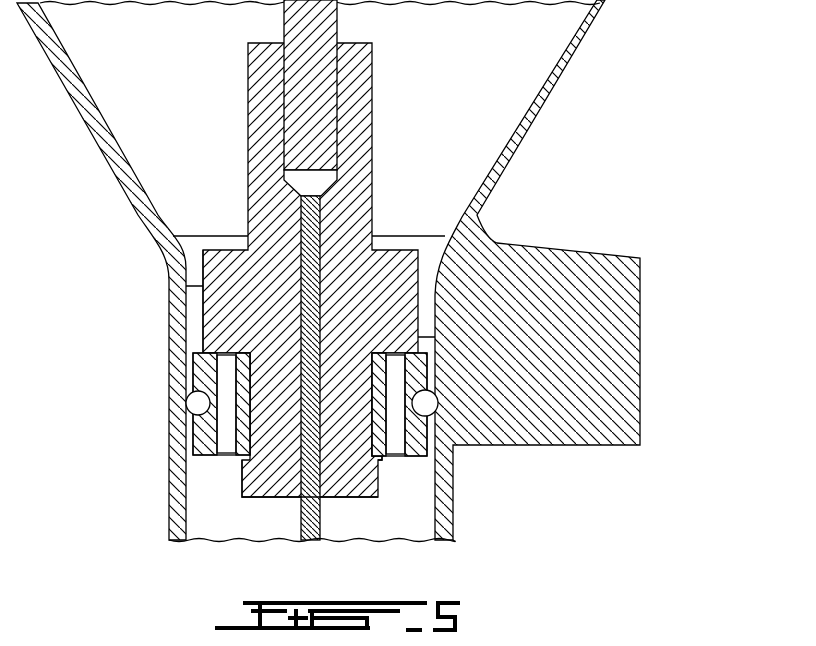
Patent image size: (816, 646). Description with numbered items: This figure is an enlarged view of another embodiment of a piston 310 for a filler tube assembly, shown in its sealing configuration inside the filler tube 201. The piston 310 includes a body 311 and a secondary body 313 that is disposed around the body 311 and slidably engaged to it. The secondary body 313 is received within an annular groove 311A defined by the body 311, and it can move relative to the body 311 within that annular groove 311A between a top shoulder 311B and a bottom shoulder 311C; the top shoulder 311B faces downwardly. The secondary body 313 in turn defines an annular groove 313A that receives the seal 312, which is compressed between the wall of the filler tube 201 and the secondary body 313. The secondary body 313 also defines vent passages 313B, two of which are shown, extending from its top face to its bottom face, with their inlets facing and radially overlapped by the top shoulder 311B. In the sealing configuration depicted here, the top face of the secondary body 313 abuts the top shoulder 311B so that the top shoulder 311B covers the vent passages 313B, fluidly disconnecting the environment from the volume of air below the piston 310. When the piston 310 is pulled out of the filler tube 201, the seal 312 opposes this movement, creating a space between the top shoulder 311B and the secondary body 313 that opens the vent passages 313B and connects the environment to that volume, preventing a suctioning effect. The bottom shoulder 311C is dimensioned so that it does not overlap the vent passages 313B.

The filler tube 201 is at (537, 103).
The piston 310 is at (427, 206).
The body 311 is at (382, 295).
The annular groove 311A is at (243, 459).
The top shoulder 311B is at (222, 352).
The bottom shoulder 311C is at (383, 457).
The seal 312 is at (197, 403).
The secondary body 313 is at (193, 362).
The annular groove 313A is at (195, 413).
The vent passages 313B is at (392, 427).